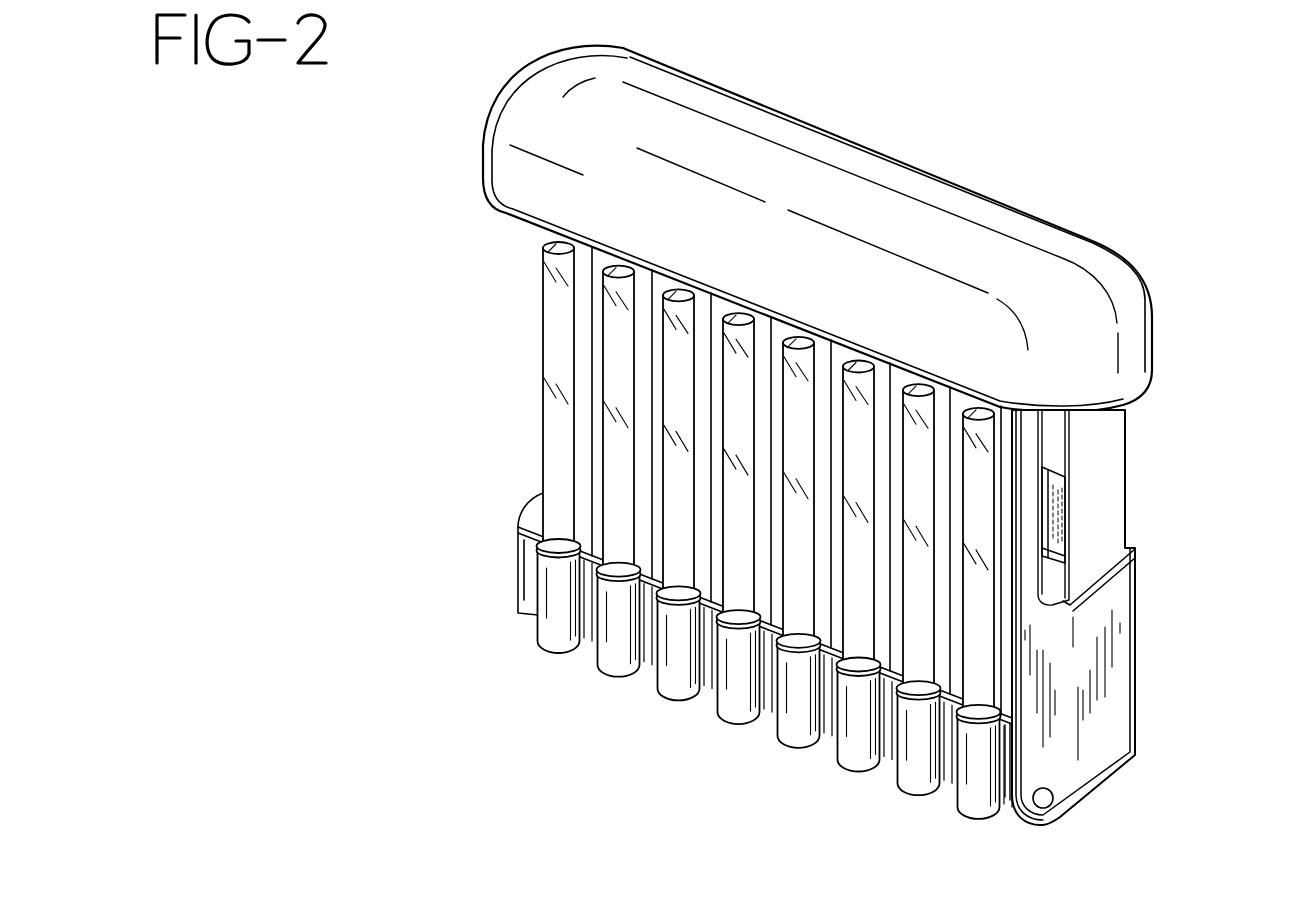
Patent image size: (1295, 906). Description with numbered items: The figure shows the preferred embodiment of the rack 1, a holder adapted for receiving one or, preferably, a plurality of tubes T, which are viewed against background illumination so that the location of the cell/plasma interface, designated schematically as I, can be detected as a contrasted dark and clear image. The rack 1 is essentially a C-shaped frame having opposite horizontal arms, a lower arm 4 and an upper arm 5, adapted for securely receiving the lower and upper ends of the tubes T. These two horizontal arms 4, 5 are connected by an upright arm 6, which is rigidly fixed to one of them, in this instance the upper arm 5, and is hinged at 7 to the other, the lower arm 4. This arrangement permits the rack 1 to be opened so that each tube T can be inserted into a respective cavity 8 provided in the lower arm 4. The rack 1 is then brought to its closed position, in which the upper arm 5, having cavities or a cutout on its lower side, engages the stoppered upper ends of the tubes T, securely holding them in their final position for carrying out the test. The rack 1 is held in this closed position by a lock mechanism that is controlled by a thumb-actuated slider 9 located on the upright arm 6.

The rack 1 is at (1044, 133).
The lower arm 4 is at (765, 707).
The upper arm 5 is at (762, 88).
The upright arm 6 is at (1098, 654).
The hinge 7 is at (1050, 796).
The cavities 8 is at (680, 688).
The thumb-actuated slider 9 is at (1050, 513).
The cell/plasma interface I is at (677, 298).
The tube T is at (522, 437).